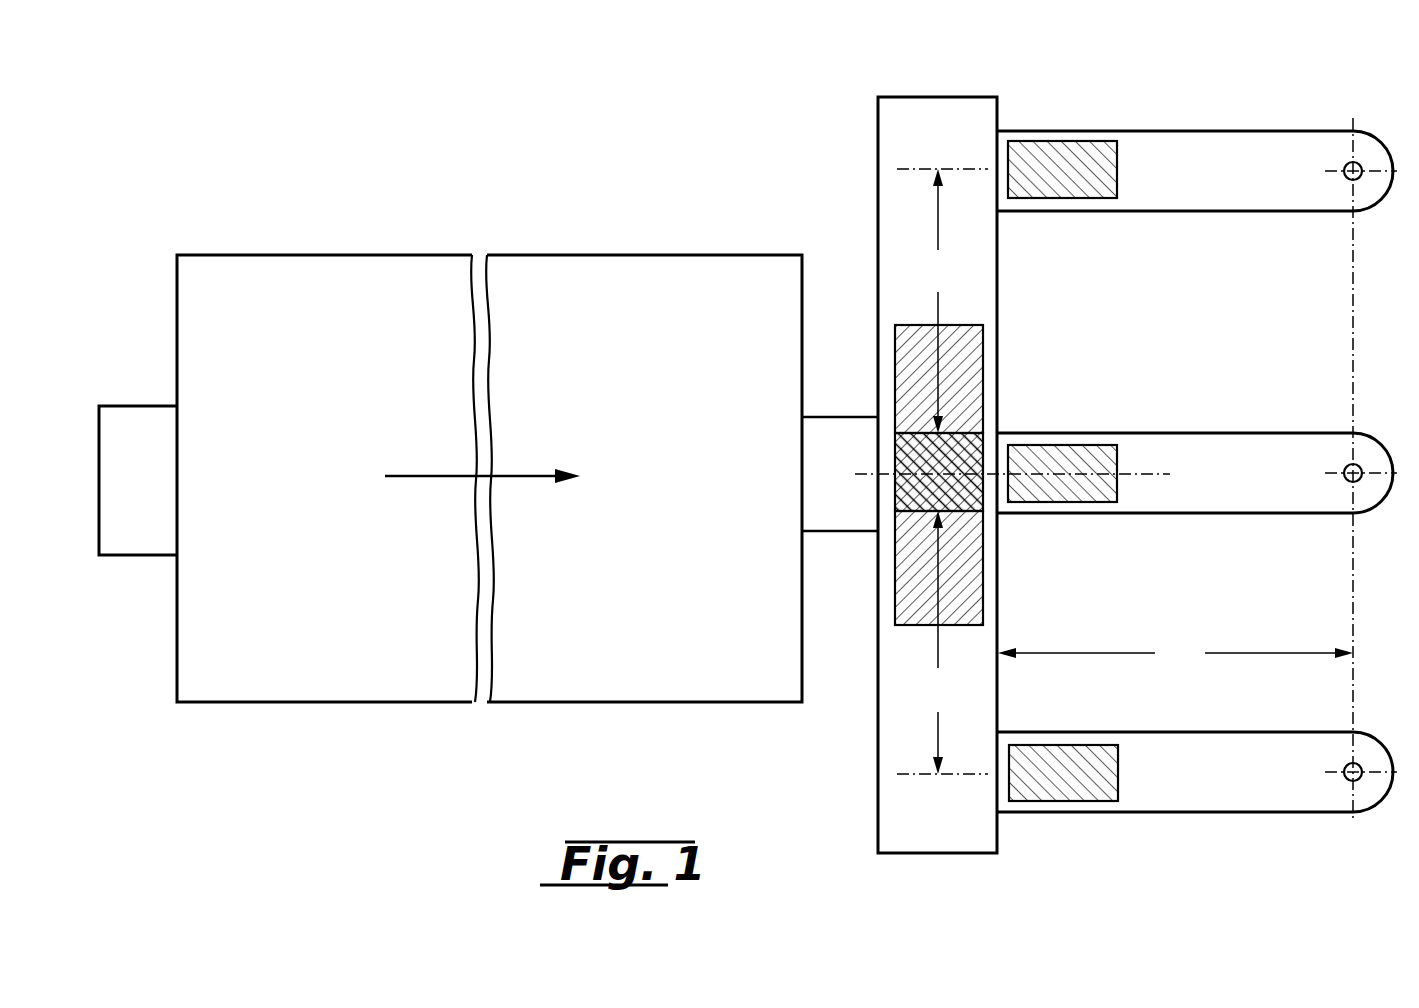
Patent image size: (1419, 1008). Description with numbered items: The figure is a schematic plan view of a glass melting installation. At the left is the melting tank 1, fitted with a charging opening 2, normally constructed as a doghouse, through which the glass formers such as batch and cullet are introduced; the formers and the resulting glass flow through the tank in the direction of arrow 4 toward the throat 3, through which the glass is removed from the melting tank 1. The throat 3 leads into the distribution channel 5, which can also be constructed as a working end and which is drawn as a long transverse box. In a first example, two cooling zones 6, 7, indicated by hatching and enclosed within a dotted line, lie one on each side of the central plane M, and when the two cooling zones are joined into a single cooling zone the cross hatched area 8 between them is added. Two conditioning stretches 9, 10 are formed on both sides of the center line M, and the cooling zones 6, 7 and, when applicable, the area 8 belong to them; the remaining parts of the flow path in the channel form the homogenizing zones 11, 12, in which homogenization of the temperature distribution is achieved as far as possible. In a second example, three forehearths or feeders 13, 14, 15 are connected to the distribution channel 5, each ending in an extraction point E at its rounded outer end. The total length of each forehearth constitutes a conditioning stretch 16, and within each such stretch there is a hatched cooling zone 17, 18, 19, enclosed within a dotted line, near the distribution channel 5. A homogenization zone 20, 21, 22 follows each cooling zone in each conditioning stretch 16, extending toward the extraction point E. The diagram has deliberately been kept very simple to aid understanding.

The melting tank 1 is at (445, 688).
The charging opening 2 is at (140, 422).
The throat 3 is at (841, 531).
The arrow 4 is at (417, 478).
The distribution channel 5 is at (872, 750).
The cooling zone 6 is at (1008, 325).
The cooling zone 7 is at (1008, 515).
The cross hatched area 8 is at (894, 462).
The conditioning stretch 9 is at (942, 301).
The conditioning stretch 10 is at (942, 642).
The homogenizing zone 11 is at (866, 168).
The homogenizing zone 12 is at (866, 625).
The forehearth 13 is at (1237, 195).
The forehearth 14 is at (1252, 505).
The forehearth 15 is at (1225, 800).
The conditioning stretch 16 is at (1175, 654).
The cooling zone 17 is at (1061, 185).
The cooling zone 18 is at (1082, 490).
The cooling zone 19 is at (1071, 790).
The homogenization zone 20 is at (1122, 117).
The homogenization zone 21 is at (1350, 419).
The homogenization zone 22 is at (1350, 717).
The central plane M is at (1010, 475).
The extraction point E is at (1348, 779).